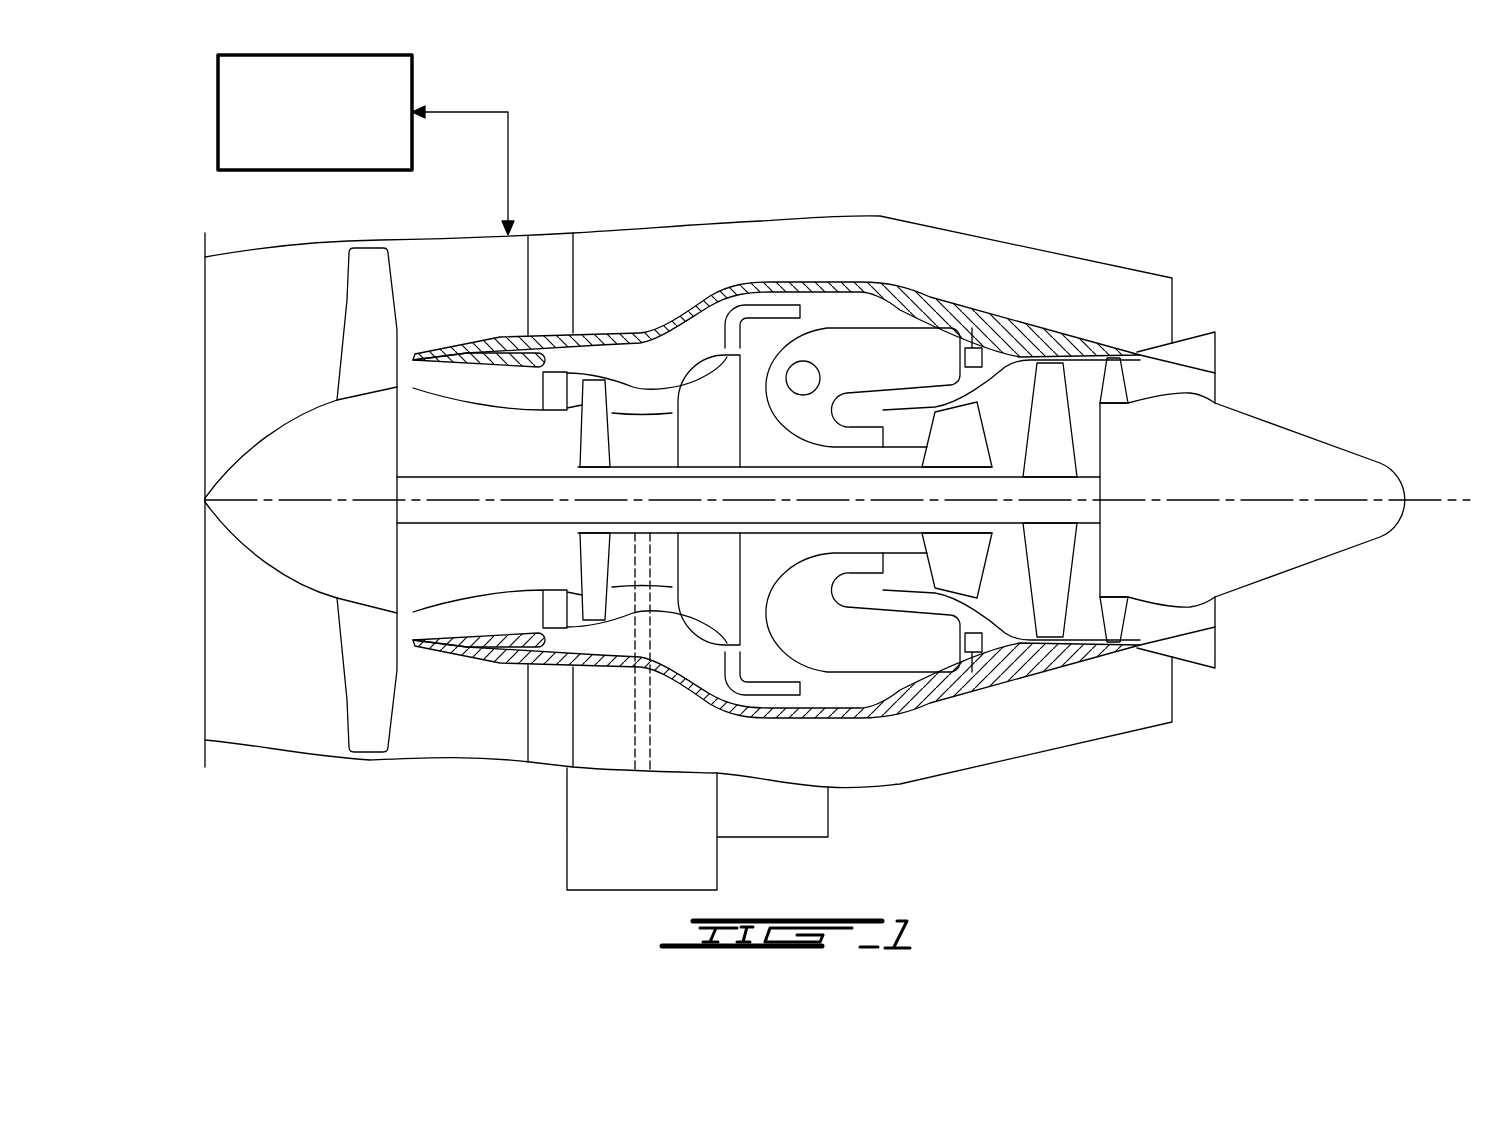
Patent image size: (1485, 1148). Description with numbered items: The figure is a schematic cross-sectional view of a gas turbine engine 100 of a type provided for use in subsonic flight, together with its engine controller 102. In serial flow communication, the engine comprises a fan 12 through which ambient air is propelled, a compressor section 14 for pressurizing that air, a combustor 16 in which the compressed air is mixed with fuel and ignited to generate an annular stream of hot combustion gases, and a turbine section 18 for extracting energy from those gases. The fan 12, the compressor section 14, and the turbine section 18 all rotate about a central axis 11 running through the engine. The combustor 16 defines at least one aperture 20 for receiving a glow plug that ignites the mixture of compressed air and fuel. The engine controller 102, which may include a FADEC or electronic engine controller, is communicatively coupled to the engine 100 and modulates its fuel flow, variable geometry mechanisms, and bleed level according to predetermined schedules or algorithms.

The engine 100 is at (1070, 195).
The engine controller 102 is at (218, 110).
The central axis 11 is at (1440, 500).
The fan 12 is at (355, 662).
The compressor section 14 is at (630, 393).
The combustor 16 is at (865, 352).
The turbine section 18 is at (1006, 570).
The aperture 20 is at (789, 368).